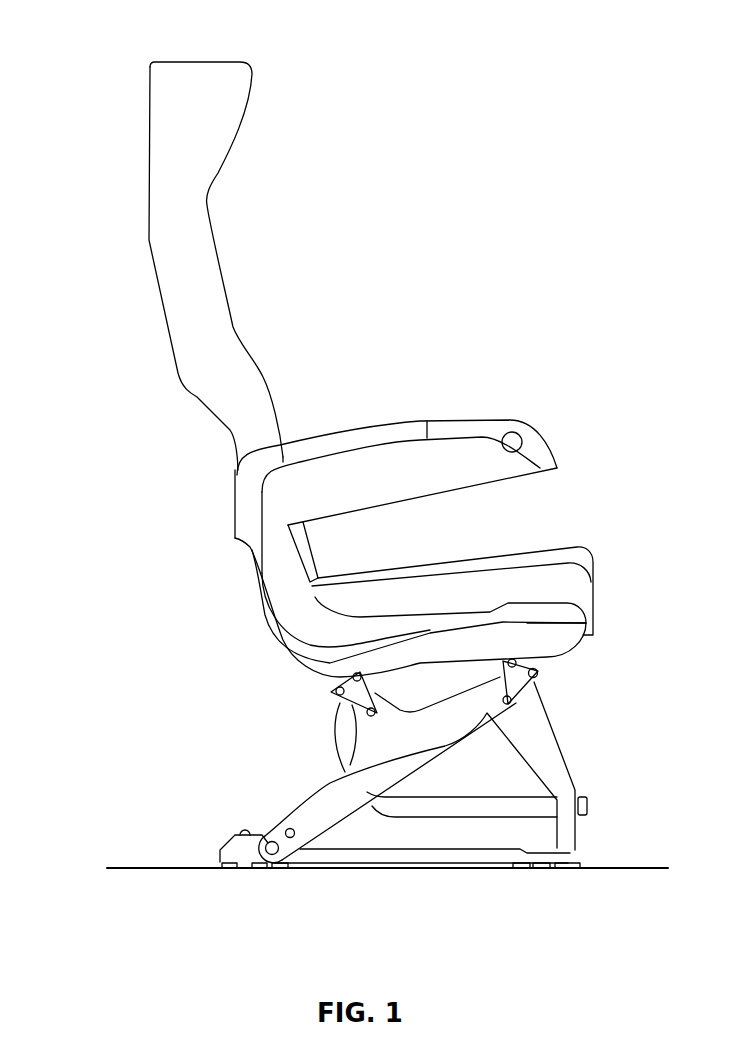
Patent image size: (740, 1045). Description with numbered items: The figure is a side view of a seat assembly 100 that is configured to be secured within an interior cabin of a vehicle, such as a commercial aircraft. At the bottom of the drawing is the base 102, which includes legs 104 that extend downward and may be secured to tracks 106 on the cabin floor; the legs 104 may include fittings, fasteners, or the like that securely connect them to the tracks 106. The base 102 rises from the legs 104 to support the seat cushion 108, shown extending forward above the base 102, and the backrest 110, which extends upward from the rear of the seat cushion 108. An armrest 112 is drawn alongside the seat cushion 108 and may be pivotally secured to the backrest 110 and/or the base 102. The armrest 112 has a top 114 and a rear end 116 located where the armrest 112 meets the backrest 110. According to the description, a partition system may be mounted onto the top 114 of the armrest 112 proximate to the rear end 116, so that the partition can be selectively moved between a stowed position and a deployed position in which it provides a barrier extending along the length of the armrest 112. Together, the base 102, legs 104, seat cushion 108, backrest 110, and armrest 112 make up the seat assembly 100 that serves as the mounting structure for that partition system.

The seat assembly 100 is at (133, 67).
The base 102 is at (330, 778).
The legs 104 is at (218, 857).
The tracks 106 is at (298, 869).
The seat cushion 108 is at (580, 547).
The backrest 110 is at (219, 174).
The armrest 112 is at (461, 420).
The top of the armrest 114 is at (257, 457).
The rear end 116 is at (238, 470).